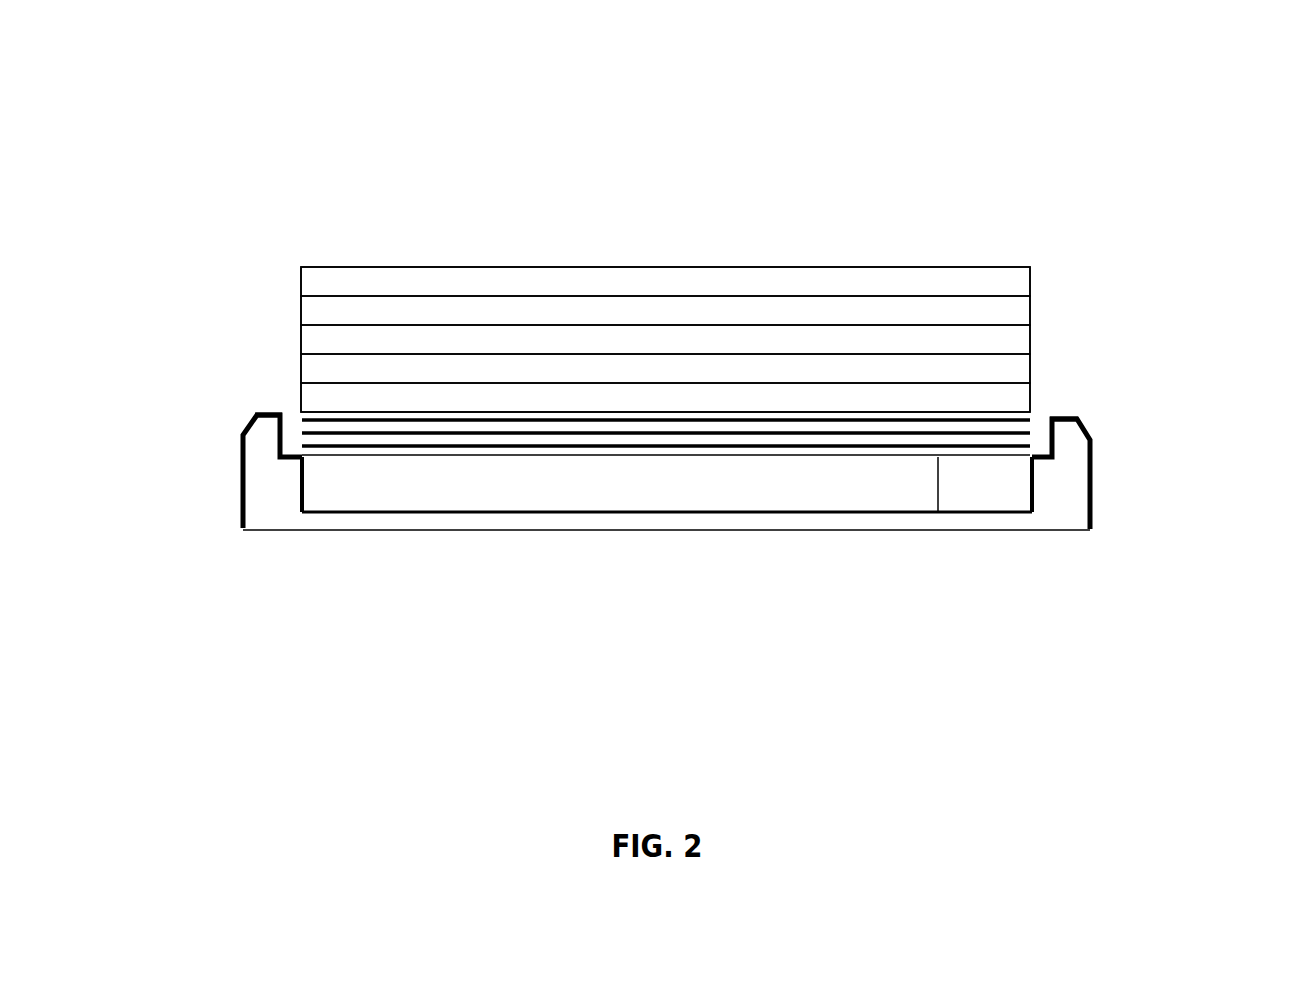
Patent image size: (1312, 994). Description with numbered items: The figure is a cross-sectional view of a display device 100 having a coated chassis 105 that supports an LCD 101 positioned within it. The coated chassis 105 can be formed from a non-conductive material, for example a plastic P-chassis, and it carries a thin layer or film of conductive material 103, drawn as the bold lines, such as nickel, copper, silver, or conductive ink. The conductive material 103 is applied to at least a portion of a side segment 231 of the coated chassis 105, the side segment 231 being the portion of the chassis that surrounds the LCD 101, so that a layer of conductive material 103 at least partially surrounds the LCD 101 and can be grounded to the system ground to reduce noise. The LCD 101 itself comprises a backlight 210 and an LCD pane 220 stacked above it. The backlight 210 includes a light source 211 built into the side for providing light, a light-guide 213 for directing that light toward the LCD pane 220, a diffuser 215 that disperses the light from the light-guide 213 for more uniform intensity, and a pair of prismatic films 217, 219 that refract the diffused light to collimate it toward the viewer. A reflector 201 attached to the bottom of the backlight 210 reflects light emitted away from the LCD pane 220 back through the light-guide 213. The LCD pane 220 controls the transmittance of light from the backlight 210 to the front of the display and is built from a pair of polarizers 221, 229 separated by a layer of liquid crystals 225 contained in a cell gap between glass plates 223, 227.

The device 100 is at (268, 72).
The LCD 101 is at (877, 268).
The conductive material 103 is at (1113, 340).
The coated chassis 105 is at (677, 522).
The reflector 201 is at (590, 512).
The backlight 210 is at (222, 420).
The light source 211 is at (970, 502).
The light-guide 213 is at (667, 483).
The diffuser 215 is at (769, 455).
The prismatic film 217 is at (802, 435).
The prismatic film 219 is at (1095, 418).
The LCD pane 220 is at (222, 268).
The polarizer 221 is at (665, 397).
The glass plate 223 is at (665, 368).
The layer of liquid crystals 225 is at (665, 339).
The glass plate 227 is at (665, 310).
The polarizer 229 is at (665, 281).
The side segment 231 is at (262, 492).